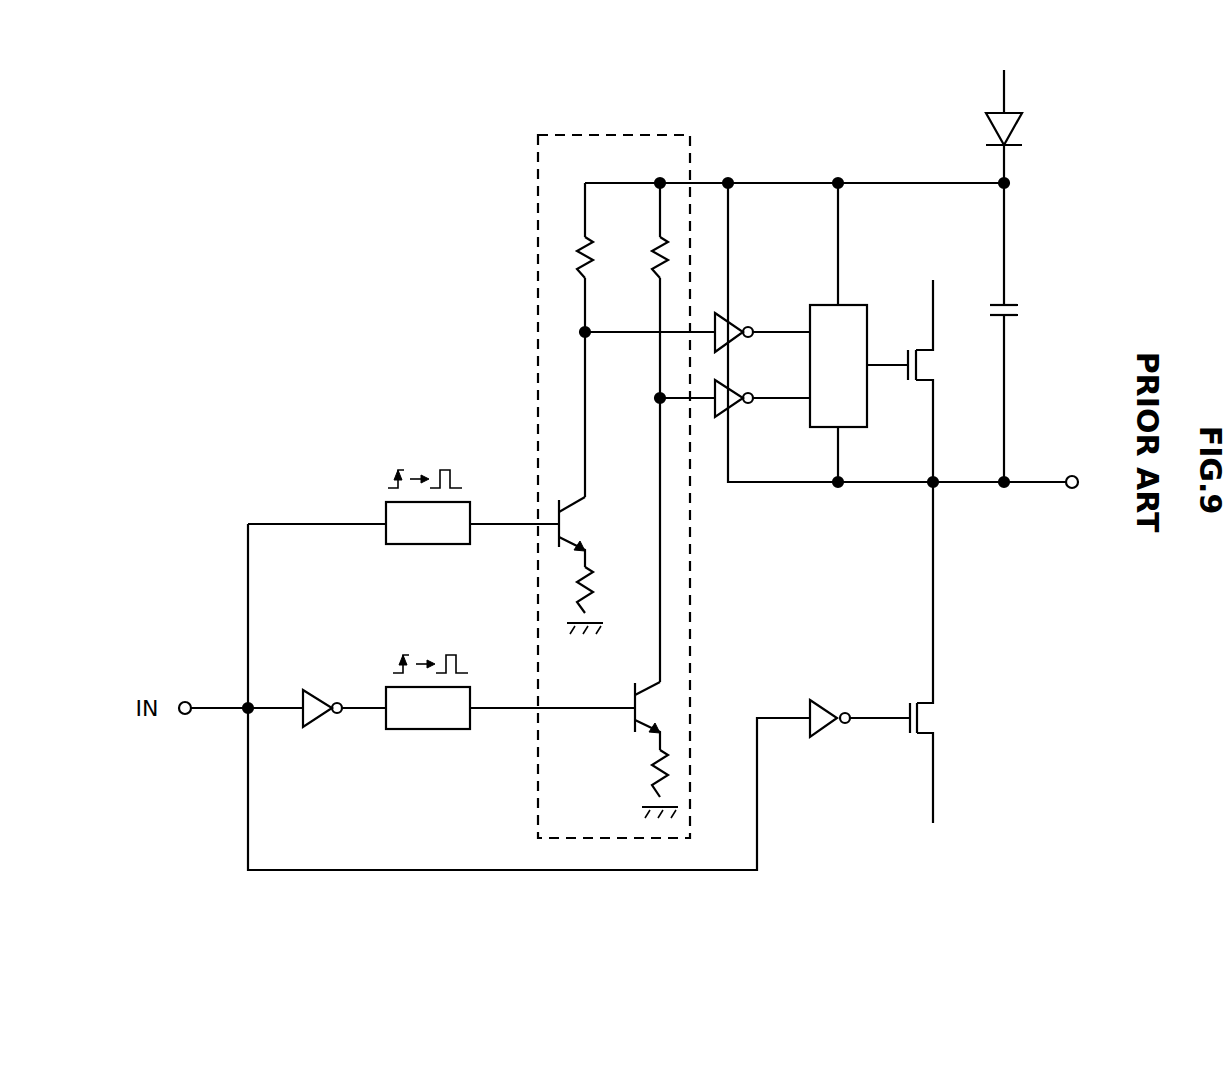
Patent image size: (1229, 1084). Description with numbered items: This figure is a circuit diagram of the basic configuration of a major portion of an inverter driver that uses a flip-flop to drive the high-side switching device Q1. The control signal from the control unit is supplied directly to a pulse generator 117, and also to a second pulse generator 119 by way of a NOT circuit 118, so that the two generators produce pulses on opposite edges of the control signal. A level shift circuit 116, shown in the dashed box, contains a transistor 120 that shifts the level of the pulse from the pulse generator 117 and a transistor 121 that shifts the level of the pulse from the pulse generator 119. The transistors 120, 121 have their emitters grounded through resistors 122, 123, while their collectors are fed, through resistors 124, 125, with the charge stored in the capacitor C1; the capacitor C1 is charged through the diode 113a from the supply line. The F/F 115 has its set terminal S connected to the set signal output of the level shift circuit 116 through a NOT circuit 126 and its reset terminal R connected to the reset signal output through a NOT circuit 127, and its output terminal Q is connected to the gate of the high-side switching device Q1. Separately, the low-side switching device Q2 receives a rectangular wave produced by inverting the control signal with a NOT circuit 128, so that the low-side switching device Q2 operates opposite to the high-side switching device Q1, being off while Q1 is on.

The diode 113a is at (1025, 120).
The F/F 115 is at (854, 304).
The level shift circuit 116 is at (646, 134).
The pulse generator 117 is at (437, 547).
The NOT circuit 118 is at (319, 722).
The pulse generator 119 is at (437, 731).
The transistor 120 is at (580, 520).
The transistor 121 is at (628, 720).
The resistor 122 is at (596, 575).
The resistor 123 is at (645, 775).
The resistor 124 is at (598, 254).
The resistor 125 is at (647, 269).
The NOT circuit 126 is at (735, 320).
The NOT circuit 127 is at (735, 410).
The NOT circuit 128 is at (820, 698).
The high-side switching device Q1 is at (938, 366).
The low-side switching device Q2 is at (938, 719).
The capacitor C1 is at (1024, 310).